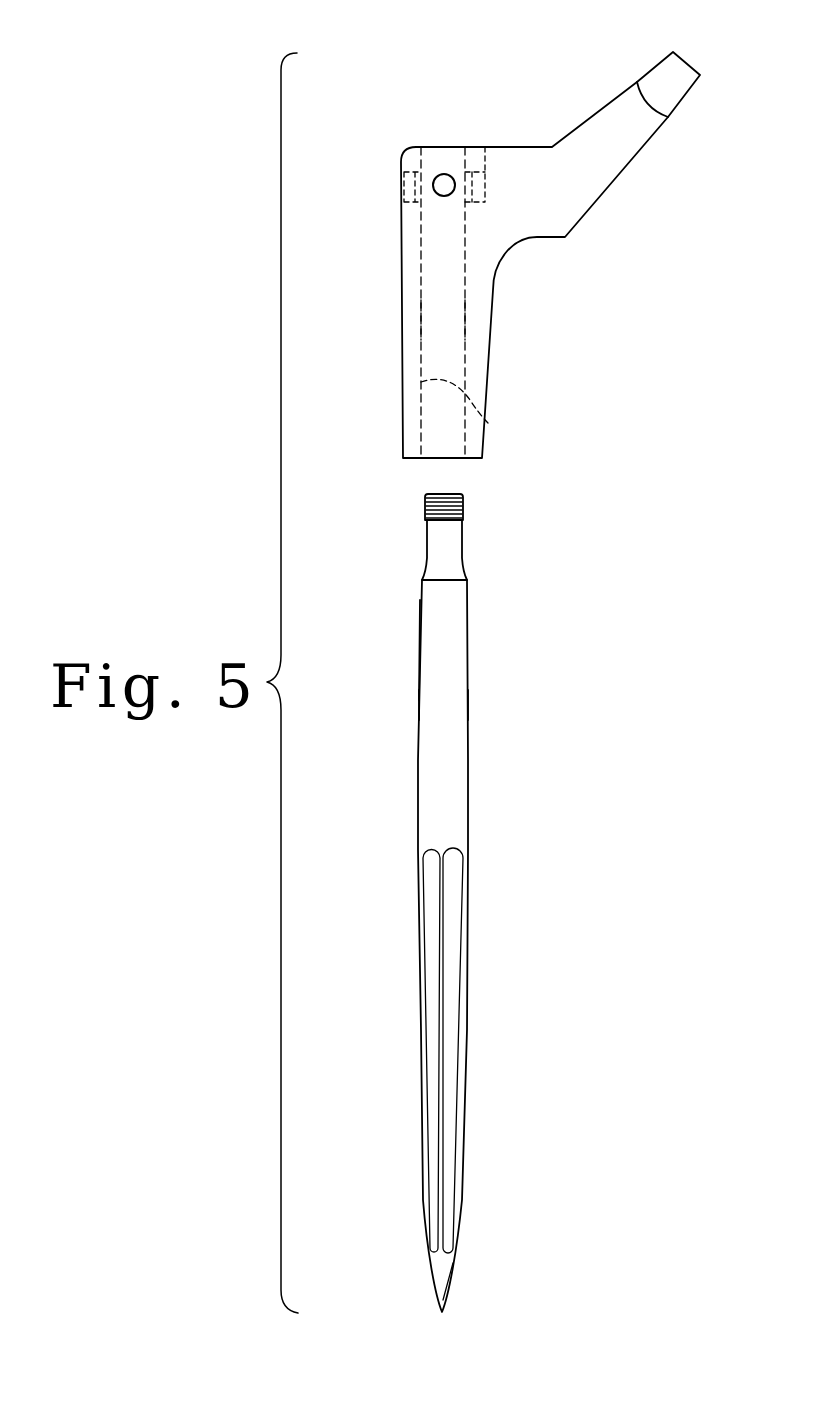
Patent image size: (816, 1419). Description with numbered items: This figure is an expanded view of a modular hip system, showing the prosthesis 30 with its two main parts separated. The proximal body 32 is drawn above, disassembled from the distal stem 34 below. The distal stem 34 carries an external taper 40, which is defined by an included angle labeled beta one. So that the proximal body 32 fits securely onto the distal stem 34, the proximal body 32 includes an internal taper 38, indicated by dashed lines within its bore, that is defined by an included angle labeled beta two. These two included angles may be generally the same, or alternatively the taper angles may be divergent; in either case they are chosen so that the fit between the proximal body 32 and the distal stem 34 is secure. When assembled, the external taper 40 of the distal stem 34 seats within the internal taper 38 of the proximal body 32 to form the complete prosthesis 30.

The prosthesis 30 is at (390, 101).
The proximal body 32 is at (522, 240).
The distal stem 34 is at (468, 808).
The internal taper 38 is at (488, 423).
The external taper 40 is at (418, 640).